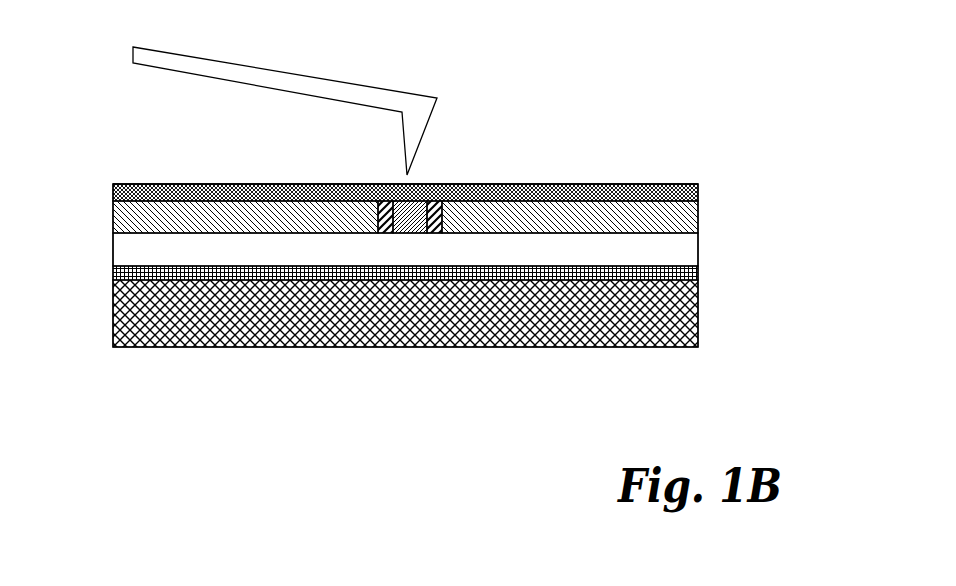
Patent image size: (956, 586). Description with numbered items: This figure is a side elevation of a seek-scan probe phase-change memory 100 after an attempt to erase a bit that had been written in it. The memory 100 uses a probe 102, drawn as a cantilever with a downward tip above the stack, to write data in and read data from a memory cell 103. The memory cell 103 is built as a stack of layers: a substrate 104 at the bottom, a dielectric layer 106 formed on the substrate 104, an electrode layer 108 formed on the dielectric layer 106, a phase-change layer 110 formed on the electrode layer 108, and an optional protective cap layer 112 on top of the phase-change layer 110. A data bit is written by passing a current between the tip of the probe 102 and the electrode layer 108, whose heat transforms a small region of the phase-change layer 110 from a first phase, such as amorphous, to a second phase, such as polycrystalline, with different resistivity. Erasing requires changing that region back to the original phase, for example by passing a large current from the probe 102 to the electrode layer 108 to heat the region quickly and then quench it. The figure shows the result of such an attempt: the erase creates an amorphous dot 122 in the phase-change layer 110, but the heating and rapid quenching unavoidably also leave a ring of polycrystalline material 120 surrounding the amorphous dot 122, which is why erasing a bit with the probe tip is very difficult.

The seek-scan probe phase-change memory 100 is at (604, 78).
The probe 102 is at (302, 80).
The memory cell 103 is at (211, 176).
The substrate 104 is at (698, 337).
The dielectric layer 106 is at (113, 273).
The electrode layer 108 is at (698, 257).
The phase-change layer 110 is at (113, 215).
The protective cap layer 112 is at (600, 193).
The ring of polycrystalline material 120 is at (443, 202).
The amorphous dot 122 is at (378, 202).